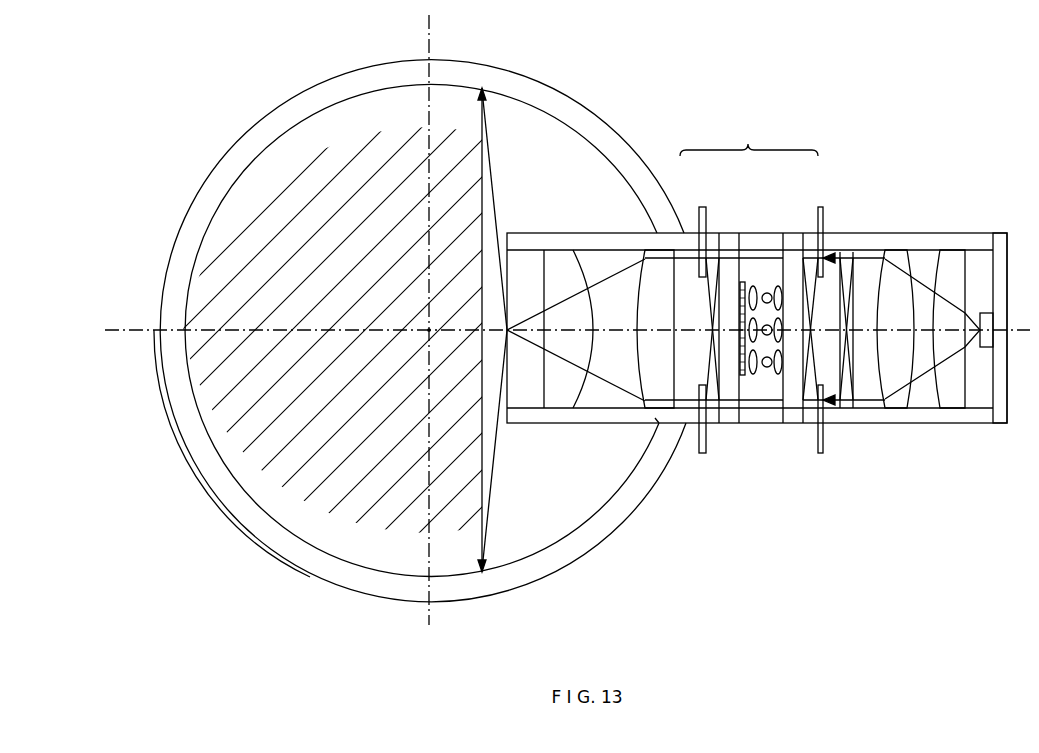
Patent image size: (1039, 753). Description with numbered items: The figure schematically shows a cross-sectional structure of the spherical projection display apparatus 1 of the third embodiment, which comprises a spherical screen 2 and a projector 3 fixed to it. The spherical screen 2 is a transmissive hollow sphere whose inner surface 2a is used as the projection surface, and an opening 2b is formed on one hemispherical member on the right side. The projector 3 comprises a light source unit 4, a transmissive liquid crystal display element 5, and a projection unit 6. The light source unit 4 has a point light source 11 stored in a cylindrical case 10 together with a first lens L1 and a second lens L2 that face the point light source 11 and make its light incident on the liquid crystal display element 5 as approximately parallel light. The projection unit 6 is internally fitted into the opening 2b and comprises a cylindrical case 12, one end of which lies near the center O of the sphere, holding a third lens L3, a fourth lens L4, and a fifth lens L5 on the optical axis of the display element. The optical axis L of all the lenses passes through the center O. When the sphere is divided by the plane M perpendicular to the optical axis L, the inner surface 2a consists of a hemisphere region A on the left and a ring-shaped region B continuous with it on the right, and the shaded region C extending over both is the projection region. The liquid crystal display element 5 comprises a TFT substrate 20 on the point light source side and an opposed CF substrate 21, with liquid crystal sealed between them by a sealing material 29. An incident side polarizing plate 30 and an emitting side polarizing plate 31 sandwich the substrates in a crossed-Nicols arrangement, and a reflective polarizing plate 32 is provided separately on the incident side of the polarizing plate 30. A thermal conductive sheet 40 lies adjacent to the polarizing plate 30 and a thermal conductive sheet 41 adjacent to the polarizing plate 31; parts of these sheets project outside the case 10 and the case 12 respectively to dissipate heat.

The spherical projection display apparatus 1 is at (786, 91).
The spherical screen 2 is at (300, 106).
The inner surface 2a is at (366, 96).
The opening 2b is at (680, 426).
The projector 3 is at (749, 136).
The light source unit 4 is at (843, 230).
The transmissive liquid crystal display element 5 is at (763, 230).
The projection unit 6 is at (648, 228).
The cylindrical case 10 is at (980, 236).
The point light source 11 is at (990, 348).
The cylindrical case 12 is at (592, 242).
The TFT substrate 20 is at (790, 424).
The CF substrate 21 is at (730, 424).
The sealing material 29 is at (762, 410).
The incident side polarizing plate 30 is at (810, 410).
The emitting side polarizing plate 31 is at (716, 425).
The reflective polarizing plate 32 is at (847, 410).
The thermal conductive sheet 40 is at (820, 455).
The thermal conductive sheet 41 is at (703, 455).
The hemisphere region A is at (339, 174).
The ring-shaped region B is at (529, 174).
The projection region C is at (246, 472).
The optical axis L is at (118, 330).
The plane M is at (437, 36).
The center O is at (429, 325).
The first lens L1 is at (952, 410).
The second lens L2 is at (897, 410).
The third lens L3 is at (648, 410).
The fourth lens L4 is at (564, 410).
The fifth lens L5 is at (523, 410).